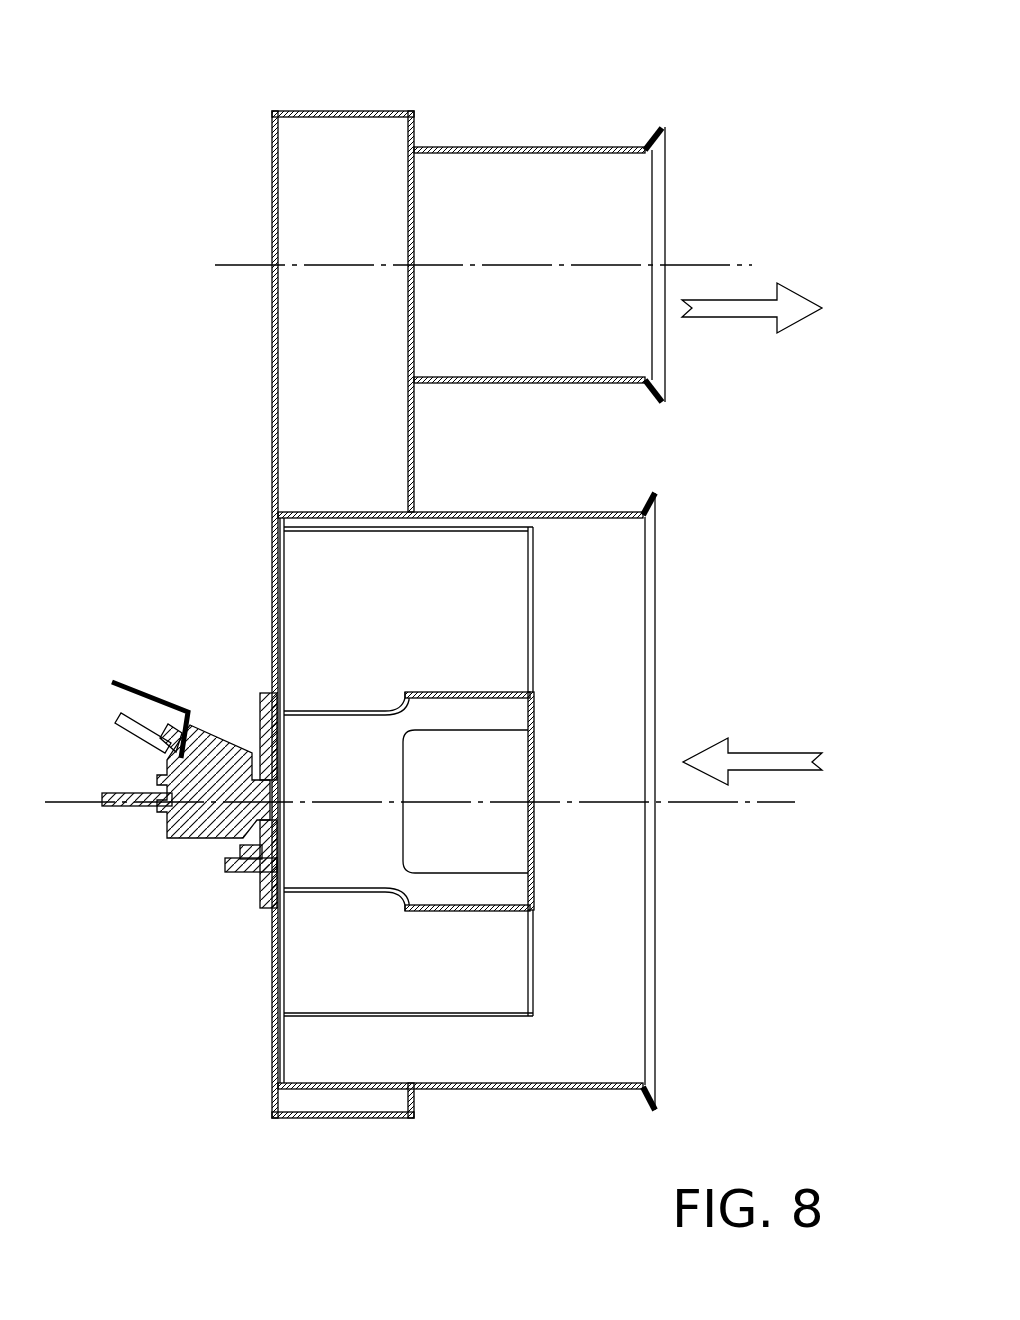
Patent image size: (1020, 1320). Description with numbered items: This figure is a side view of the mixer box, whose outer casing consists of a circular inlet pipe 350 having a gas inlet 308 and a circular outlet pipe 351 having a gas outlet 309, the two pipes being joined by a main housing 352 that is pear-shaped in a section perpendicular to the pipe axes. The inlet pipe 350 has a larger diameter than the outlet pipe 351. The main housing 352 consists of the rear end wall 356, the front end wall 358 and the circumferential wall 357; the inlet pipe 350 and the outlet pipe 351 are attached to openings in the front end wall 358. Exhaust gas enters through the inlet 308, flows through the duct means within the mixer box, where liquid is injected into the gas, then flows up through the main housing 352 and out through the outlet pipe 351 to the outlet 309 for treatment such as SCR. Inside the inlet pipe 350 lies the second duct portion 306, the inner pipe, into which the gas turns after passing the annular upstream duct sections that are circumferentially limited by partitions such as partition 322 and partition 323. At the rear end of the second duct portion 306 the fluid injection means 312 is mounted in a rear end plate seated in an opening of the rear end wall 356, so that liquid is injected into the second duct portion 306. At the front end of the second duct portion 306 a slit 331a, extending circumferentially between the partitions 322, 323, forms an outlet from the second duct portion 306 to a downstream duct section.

The main housing 352 is at (460, 78).
The outlet pipe 351 is at (537, 147).
The gas outlet 309 is at (632, 198).
The rear end wall 356 is at (273, 357).
The circumferential wall 357 is at (342, 437).
The front end wall 358 is at (415, 453).
The inlet pipe 350 is at (530, 1088).
The partition 322 is at (460, 612).
The partition 323 is at (460, 972).
The slit 331a is at (475, 730).
The gas inlet 308 is at (650, 1000).
The second duct portion 306 is at (340, 678).
The fluid injection means 312 is at (176, 838).